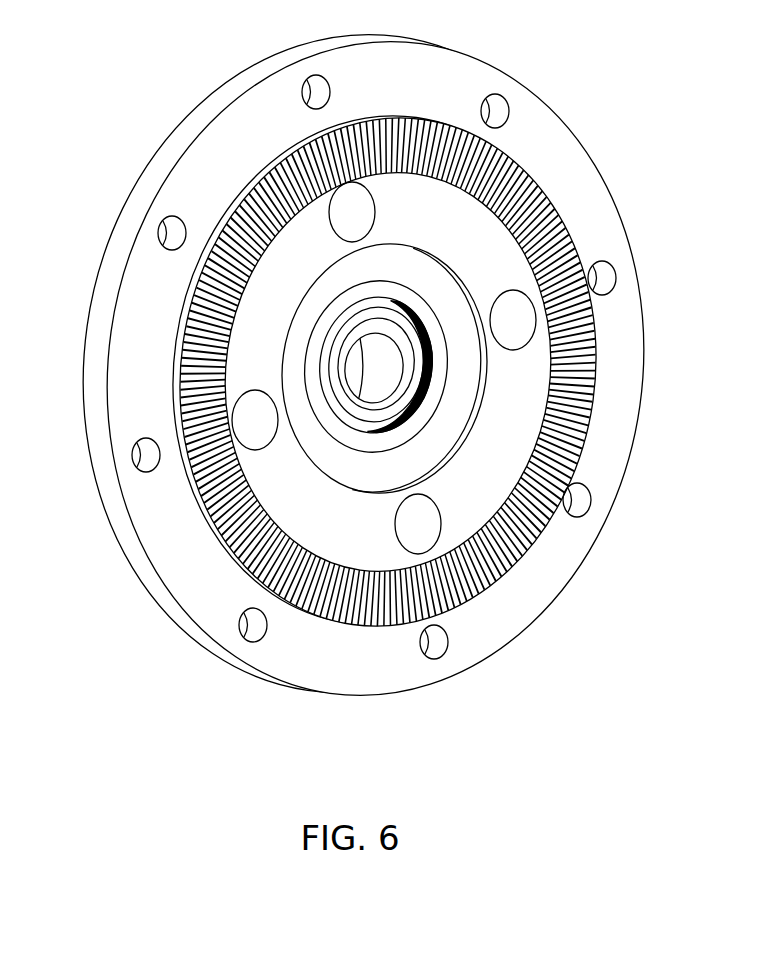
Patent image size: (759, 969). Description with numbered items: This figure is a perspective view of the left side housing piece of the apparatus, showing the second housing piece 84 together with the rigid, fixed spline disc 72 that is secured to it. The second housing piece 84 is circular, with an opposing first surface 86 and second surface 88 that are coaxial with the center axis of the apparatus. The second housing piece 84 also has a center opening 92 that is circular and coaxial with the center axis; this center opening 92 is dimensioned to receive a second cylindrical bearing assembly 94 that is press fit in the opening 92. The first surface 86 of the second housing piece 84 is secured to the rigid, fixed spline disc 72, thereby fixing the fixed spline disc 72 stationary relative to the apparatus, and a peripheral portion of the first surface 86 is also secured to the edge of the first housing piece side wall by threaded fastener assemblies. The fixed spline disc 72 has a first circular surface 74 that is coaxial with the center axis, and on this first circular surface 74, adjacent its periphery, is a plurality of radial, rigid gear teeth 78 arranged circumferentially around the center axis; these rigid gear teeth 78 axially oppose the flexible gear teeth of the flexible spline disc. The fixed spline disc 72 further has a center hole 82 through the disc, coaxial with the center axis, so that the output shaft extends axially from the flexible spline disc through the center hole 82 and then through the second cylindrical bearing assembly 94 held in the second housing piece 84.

The fixed spline disc 72 is at (227, 213).
The first circular surface 74 is at (477, 232).
The rigid gear teeth 78 is at (182, 383).
The center hole 82 is at (487, 404).
The second housing piece 84 is at (174, 613).
The first surface 86 is at (212, 612).
The second surface 88 is at (120, 540).
The center opening 92 is at (412, 422).
The second cylindrical bearing assembly 94 is at (372, 407).